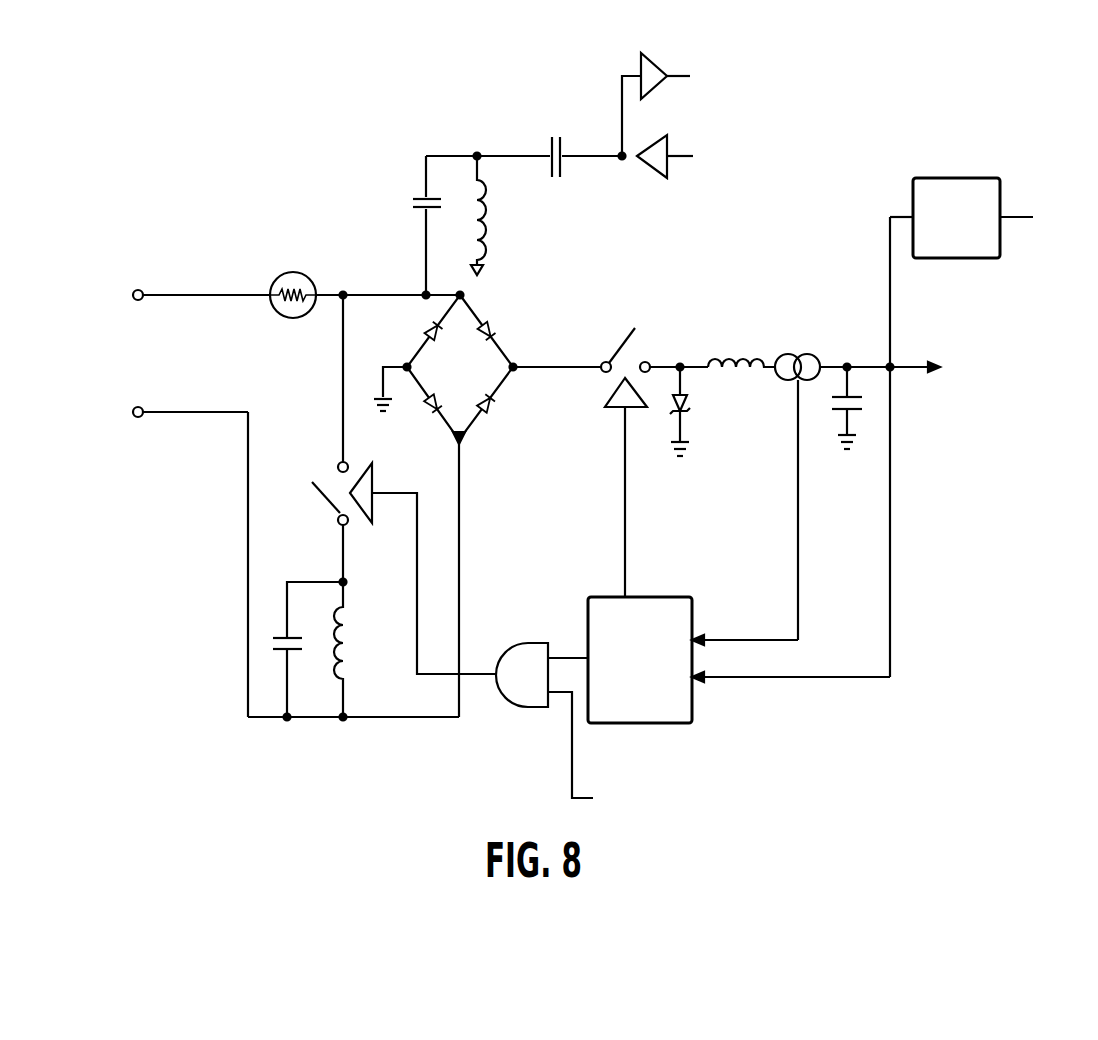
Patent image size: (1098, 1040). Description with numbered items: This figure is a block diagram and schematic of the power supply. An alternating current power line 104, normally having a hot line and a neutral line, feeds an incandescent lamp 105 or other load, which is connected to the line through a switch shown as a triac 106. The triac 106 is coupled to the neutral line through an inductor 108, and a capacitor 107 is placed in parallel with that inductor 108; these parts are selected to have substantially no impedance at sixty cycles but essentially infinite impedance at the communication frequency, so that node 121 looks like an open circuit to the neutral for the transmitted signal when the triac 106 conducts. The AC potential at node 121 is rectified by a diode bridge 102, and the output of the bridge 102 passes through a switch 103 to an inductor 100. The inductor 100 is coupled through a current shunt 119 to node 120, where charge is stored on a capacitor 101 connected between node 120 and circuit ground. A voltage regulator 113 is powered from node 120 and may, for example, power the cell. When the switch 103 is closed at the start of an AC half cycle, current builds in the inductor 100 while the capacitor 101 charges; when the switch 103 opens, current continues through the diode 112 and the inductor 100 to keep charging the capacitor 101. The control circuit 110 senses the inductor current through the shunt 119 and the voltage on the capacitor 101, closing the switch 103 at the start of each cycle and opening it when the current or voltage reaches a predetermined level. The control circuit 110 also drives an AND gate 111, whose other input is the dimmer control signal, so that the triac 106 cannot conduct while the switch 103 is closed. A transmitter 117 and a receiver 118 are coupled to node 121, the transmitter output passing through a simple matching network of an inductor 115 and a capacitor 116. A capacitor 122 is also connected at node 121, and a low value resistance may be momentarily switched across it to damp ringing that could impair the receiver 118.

The inductor 100 is at (726, 360).
The capacitor 101 is at (863, 402).
The diode bridge 102 is at (500, 385).
The switch 103 is at (618, 345).
The power line 104 is at (172, 308).
The incandescent lamp 105 is at (290, 318).
The triac 106 is at (318, 503).
The capacitor 107 is at (272, 642).
The inductor 108 is at (350, 650).
The control circuit 110 is at (682, 723).
The AND gate 111 is at (515, 708).
The diode 112 is at (688, 420).
The voltage regulator 113 is at (955, 178).
The inductor 115 is at (485, 225).
The capacitor 116 is at (556, 136).
The transmitter 117 is at (655, 178).
The receiver 118 is at (651, 60).
The current shunt 119 is at (797, 355).
The node 120 is at (893, 365).
The node 121 is at (345, 292).
The capacitor 122 is at (414, 200).